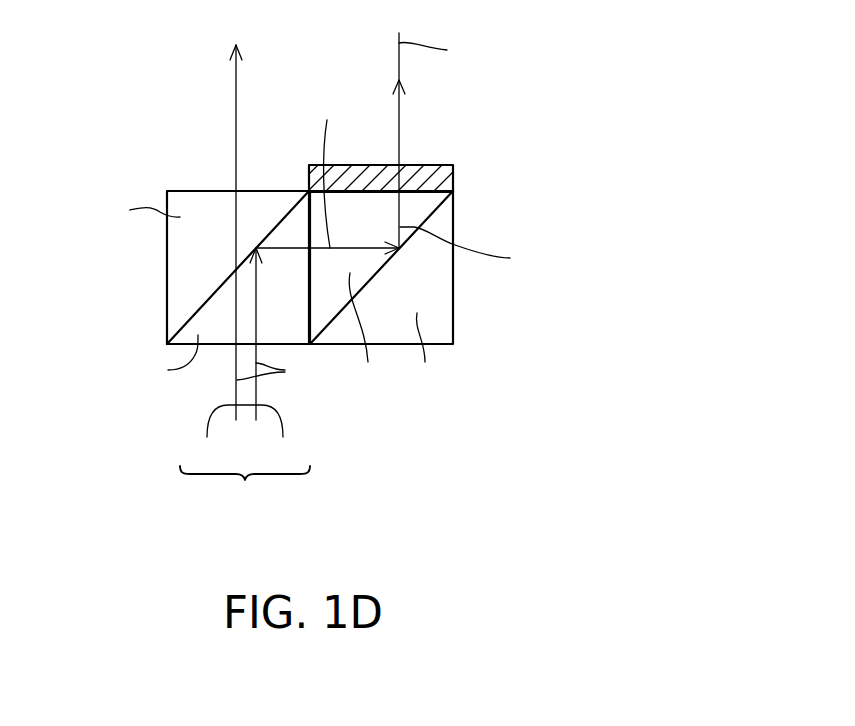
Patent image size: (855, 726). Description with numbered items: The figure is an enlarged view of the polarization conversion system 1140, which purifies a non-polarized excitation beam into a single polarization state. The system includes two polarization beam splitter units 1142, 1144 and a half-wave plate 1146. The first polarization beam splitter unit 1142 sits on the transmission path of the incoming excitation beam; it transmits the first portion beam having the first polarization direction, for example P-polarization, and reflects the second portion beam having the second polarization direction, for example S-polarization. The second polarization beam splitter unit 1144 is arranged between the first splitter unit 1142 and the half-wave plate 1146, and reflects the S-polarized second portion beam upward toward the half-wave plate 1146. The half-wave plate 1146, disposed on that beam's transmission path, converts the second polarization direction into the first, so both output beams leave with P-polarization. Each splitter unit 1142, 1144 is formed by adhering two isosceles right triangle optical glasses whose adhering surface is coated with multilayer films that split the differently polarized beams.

The polarization conversion system 1140 is at (318, 276).
The polarization beam splitter unit 1142 is at (200, 308).
The polarization beam splitter unit 1144 is at (433, 210).
The half-wave plate 1146 is at (443, 177).